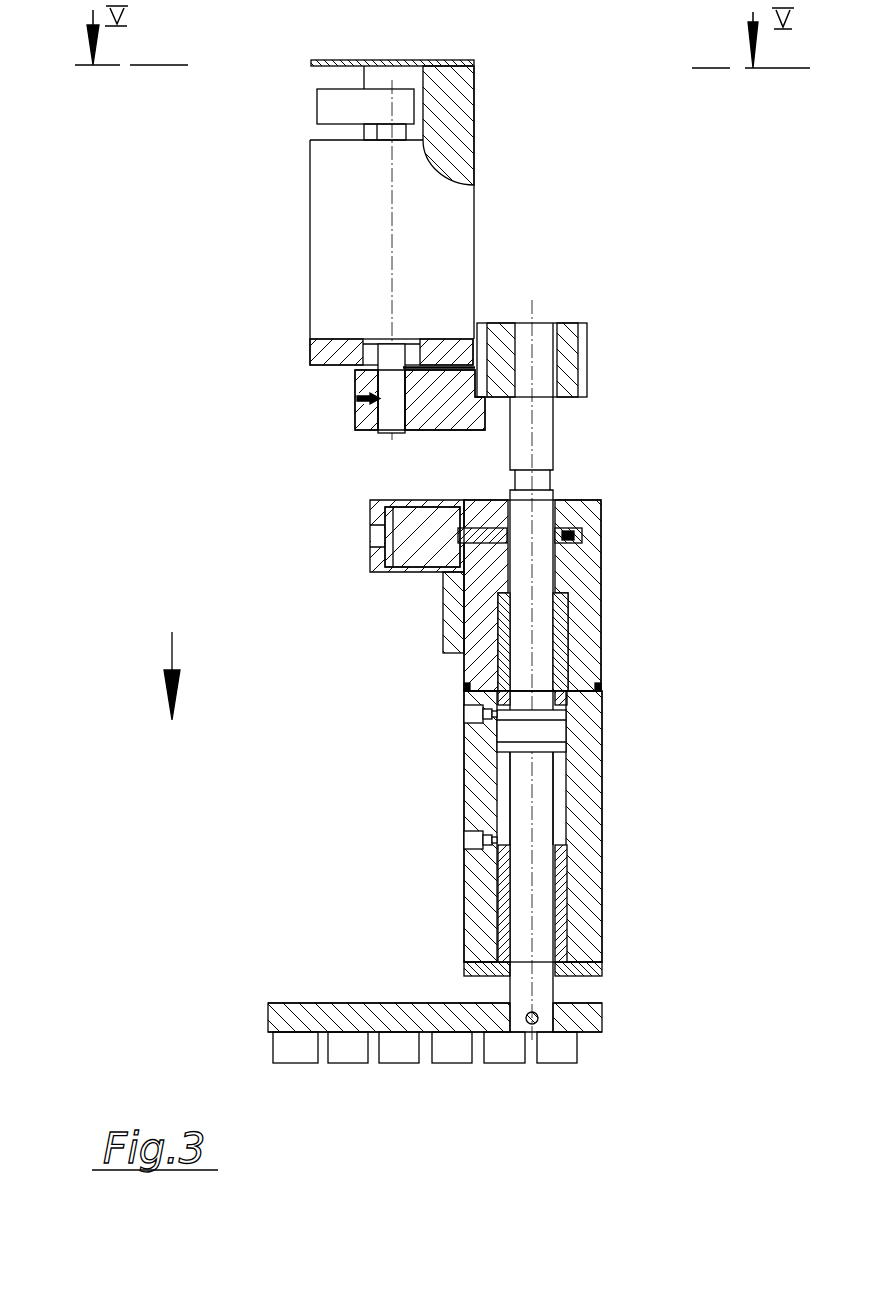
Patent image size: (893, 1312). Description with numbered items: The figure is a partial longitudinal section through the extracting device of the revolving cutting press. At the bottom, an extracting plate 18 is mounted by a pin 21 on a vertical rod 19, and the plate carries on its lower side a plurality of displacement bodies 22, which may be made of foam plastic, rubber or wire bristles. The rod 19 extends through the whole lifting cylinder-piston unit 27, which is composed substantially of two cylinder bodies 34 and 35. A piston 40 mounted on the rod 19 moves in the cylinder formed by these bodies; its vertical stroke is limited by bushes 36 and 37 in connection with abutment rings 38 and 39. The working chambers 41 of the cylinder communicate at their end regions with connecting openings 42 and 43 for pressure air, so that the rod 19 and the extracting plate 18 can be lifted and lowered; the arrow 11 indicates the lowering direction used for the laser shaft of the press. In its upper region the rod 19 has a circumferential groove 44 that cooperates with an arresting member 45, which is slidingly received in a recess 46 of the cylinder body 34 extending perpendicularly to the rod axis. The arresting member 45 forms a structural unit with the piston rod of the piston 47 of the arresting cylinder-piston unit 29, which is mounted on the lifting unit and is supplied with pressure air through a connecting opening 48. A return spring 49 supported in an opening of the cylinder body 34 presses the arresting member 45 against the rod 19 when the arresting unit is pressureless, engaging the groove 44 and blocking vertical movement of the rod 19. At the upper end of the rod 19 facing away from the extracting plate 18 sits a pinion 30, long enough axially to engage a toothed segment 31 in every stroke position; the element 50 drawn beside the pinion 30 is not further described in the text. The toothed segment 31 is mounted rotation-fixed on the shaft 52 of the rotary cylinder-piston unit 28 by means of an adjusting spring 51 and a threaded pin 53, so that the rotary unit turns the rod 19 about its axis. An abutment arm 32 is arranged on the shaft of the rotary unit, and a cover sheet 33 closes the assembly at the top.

The arrow 11 is at (172, 655).
The extracting plate 18 is at (357, 1020).
The rod 19 is at (540, 425).
The pin 21 is at (540, 1012).
The displacement bodies 22 is at (410, 1045).
The lifting cylinder-piston unit 27 is at (491, 712).
The rotary cylinder-piston unit 28 is at (352, 203).
The arresting cylinder-piston unit 29 is at (370, 503).
The pinion 30 is at (500, 318).
The toothed segment 31 is at (363, 382).
The abutment arm 32 is at (350, 101).
The cover sheet 33 is at (416, 62).
The cylinder body 34 is at (602, 602).
The cylinder body 35 is at (602, 833).
The bush 36 is at (565, 632).
The bush 37 is at (602, 915).
The abutment ring 38 is at (602, 699).
The abutment ring 39 is at (567, 860).
The piston 40 is at (555, 733).
The working chambers 41 is at (562, 805).
The connecting opening 42 is at (463, 712).
The connecting opening 43 is at (463, 845).
The circumferential groove 44 is at (553, 475).
The arresting member 45 is at (445, 633).
The recess 46 is at (492, 503).
The piston 47 is at (408, 545).
The connecting opening 48 is at (378, 532).
The return spring 49 is at (582, 537).
The bearing 50 is at (553, 325).
The adjusting spring 51 is at (422, 400).
The shaft 52 is at (355, 135).
The threaded pin 53 is at (357, 392).